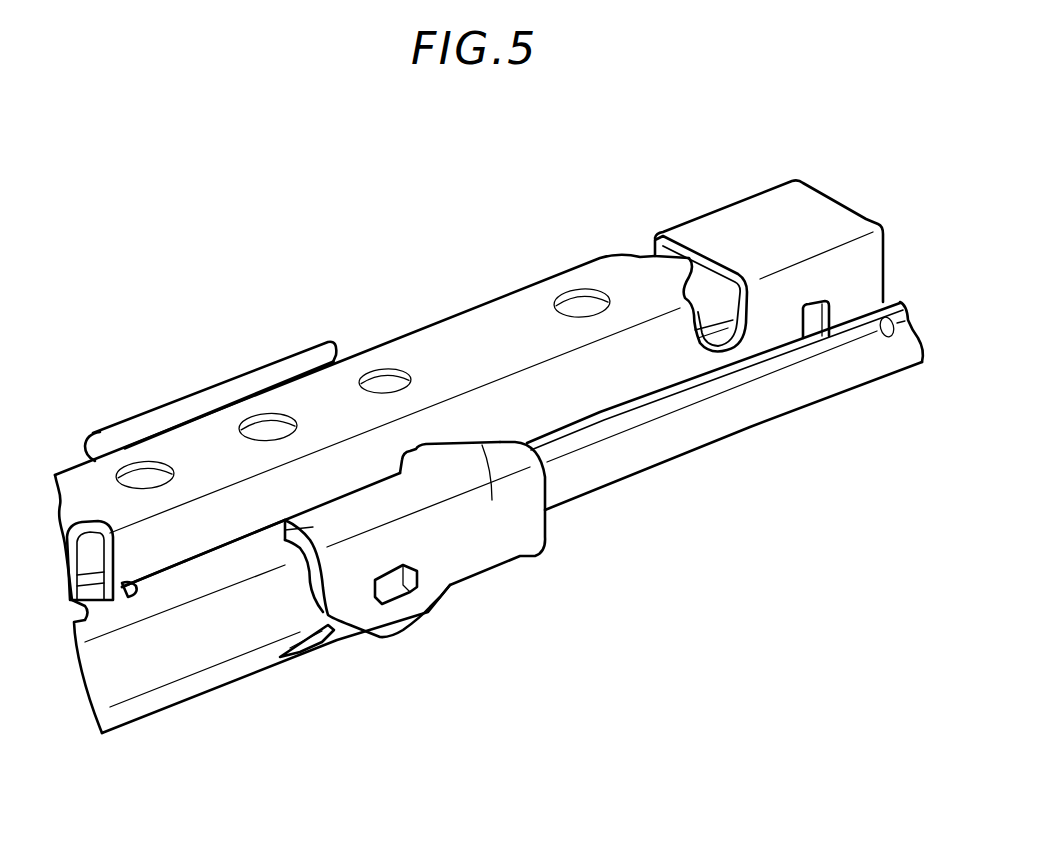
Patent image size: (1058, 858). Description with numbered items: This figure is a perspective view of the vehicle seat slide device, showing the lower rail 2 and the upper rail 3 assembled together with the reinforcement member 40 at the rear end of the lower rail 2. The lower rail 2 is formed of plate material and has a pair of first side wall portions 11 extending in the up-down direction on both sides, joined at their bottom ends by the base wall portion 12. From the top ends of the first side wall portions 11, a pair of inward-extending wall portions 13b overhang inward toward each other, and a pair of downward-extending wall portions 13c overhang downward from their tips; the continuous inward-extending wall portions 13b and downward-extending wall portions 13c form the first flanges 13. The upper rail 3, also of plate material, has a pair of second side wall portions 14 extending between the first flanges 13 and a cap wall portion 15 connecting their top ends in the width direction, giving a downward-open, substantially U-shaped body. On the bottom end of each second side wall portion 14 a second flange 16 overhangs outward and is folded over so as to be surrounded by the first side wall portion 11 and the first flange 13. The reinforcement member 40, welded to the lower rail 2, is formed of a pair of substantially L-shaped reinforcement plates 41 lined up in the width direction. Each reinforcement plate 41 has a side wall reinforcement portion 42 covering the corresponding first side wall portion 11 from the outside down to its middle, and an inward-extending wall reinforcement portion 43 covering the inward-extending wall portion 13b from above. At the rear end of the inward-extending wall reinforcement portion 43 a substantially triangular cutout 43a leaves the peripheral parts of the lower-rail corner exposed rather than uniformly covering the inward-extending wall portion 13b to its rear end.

The lower rail 2 is at (252, 621).
The upper rail 3 is at (489, 361).
The first side wall portions 11 is at (135, 657).
The base wall portion 12 is at (198, 697).
The first flanges 13 is at (176, 445).
The inward-extending wall portions 13b is at (257, 560).
The downward-extending wall portions 13c is at (183, 553).
The second side wall portions 14 is at (588, 400).
The cap wall portion 15 is at (500, 320).
The second flange 16 is at (684, 440).
The reinforcement member 40 is at (292, 355).
The reinforcement plates 41 is at (385, 284).
The side wall reinforcement portion 42 is at (412, 571).
The inward-extending wall reinforcement portion 43 is at (290, 541).
The cutout 43a is at (468, 440).